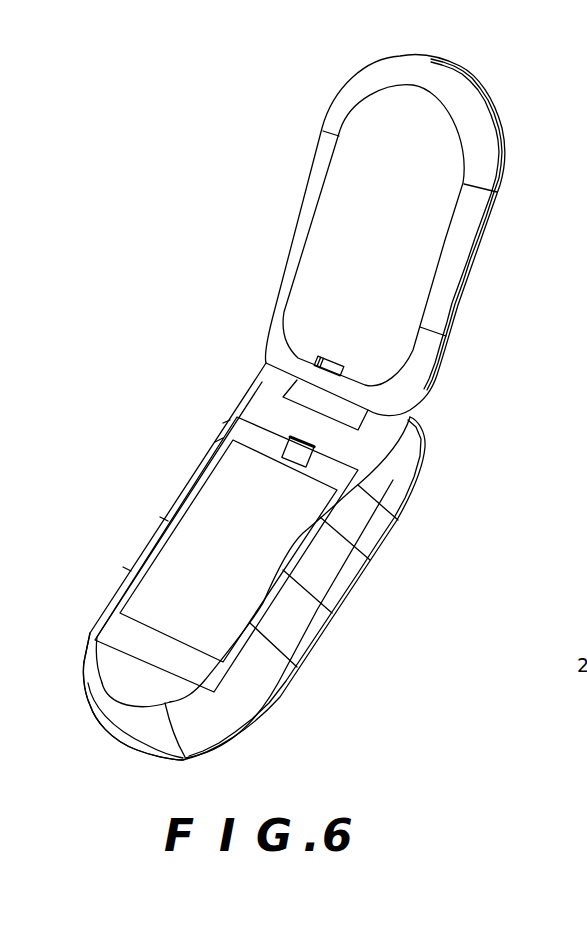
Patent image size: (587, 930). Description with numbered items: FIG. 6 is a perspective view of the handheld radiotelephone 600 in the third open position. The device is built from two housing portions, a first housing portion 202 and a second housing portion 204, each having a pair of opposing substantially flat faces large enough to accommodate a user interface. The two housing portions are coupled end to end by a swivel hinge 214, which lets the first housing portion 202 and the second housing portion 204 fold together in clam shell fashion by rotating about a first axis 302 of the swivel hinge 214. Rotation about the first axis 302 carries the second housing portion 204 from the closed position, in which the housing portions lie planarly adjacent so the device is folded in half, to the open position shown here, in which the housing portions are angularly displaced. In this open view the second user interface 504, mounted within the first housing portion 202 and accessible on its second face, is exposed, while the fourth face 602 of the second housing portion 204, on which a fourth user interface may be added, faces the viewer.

The wireless communication device 600 is at (295, 407).
The fourth face 602 is at (397, 242).
The second housing portion 204 is at (505, 132).
The swivel hinge 214 is at (296, 393).
The first axis 302 is at (221, 561).
The second user interface 504 is at (218, 497).
The first housing portion 202 is at (277, 698).